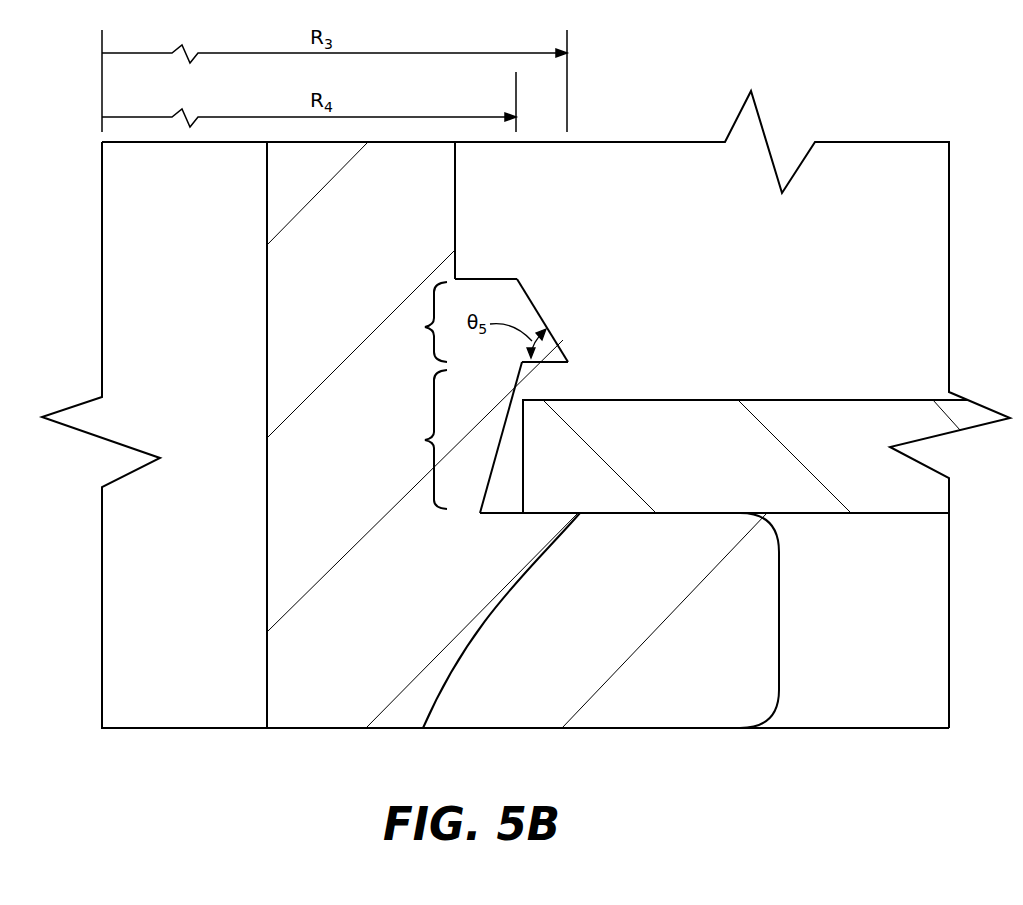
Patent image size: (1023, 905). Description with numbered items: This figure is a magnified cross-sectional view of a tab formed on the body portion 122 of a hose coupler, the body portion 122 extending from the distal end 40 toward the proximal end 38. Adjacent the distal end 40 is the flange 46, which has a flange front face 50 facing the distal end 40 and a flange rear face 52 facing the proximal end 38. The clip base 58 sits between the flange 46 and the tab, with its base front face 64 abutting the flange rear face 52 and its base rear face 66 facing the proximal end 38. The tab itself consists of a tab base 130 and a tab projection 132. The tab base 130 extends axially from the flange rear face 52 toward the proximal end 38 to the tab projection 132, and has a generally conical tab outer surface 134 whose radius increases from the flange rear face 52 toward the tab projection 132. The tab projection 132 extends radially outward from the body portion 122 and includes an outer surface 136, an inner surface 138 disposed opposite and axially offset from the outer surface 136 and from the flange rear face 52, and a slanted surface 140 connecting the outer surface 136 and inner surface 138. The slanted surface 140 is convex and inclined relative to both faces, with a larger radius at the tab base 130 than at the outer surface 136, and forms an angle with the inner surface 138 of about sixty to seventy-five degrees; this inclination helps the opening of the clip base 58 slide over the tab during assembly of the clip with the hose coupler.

The proximal end 38 is at (596, 61).
The distal end 40 is at (285, 762).
The flange 46 is at (702, 722).
The flange front face 50 is at (533, 729).
The flange rear face 52 is at (423, 728).
The clip base 58 is at (764, 415).
The base front face 64 is at (832, 514).
The base rear face 66 is at (860, 398).
The body portion 122 is at (440, 184).
The tab base 130 is at (426, 442).
The tab projection 132 is at (426, 330).
The tab outer surface 134 is at (500, 441).
The outer surface 136 is at (484, 273).
The inner surface 138 is at (553, 368).
The slanted surface 140 is at (532, 299).